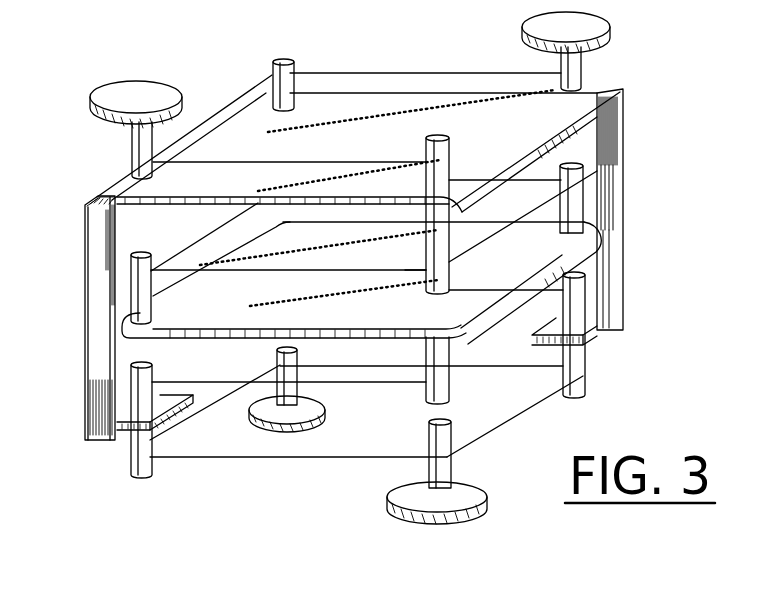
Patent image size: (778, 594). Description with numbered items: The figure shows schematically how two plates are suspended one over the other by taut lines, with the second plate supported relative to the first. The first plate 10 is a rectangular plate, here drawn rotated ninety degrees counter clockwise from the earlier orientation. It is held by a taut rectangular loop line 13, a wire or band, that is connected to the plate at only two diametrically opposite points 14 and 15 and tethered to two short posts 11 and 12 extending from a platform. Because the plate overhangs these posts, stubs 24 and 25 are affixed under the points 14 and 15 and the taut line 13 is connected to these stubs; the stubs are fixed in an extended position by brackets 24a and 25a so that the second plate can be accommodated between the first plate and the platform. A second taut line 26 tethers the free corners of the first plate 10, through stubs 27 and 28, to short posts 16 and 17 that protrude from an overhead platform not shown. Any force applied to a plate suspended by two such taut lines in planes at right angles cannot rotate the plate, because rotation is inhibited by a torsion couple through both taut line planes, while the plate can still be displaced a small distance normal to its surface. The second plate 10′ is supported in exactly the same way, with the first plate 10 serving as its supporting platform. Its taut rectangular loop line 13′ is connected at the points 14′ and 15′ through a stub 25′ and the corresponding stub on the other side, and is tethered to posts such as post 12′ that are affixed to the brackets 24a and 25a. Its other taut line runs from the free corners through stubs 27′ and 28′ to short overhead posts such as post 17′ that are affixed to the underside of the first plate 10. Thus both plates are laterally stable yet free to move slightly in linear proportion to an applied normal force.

The first plate 10 is at (345, 100).
The second plate 10′ is at (222, 340).
The short post 11 is at (137, 392).
The short post 12 is at (296, 369).
The post 12′ is at (586, 273).
The taut rectangular loop line 13 is at (300, 458).
The taut rectangular loop line 13′ is at (373, 383).
The tethered point 14 is at (146, 189).
The tethered point 14′ is at (282, 233).
The tethered point 15 is at (571, 102).
The tethered point 15′ is at (443, 318).
The short post 16 is at (134, 147).
The short post 17 is at (573, 70).
The short overhead post 17′ is at (445, 282).
The stub 24 is at (140, 448).
The bracket 24a is at (97, 231).
The stub 25 is at (586, 362).
The bracket 25a is at (620, 125).
The stub 25′ is at (444, 402).
The taut line 26 is at (437, 73).
The stub 27 is at (440, 137).
The stub 27′ is at (133, 292).
The stub 28 is at (292, 62).
The stub 28′ is at (590, 194).